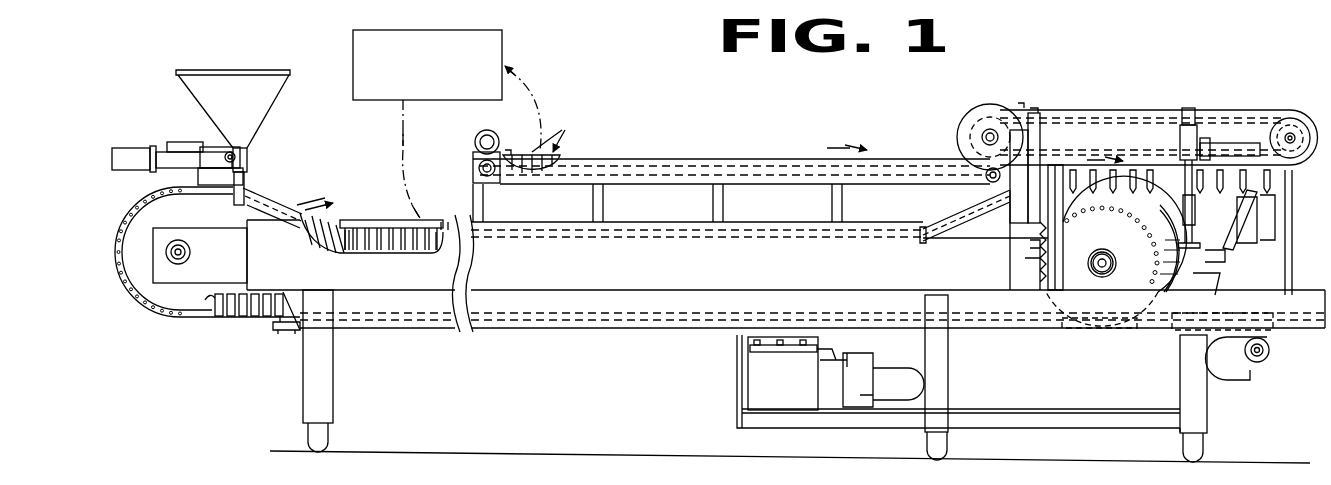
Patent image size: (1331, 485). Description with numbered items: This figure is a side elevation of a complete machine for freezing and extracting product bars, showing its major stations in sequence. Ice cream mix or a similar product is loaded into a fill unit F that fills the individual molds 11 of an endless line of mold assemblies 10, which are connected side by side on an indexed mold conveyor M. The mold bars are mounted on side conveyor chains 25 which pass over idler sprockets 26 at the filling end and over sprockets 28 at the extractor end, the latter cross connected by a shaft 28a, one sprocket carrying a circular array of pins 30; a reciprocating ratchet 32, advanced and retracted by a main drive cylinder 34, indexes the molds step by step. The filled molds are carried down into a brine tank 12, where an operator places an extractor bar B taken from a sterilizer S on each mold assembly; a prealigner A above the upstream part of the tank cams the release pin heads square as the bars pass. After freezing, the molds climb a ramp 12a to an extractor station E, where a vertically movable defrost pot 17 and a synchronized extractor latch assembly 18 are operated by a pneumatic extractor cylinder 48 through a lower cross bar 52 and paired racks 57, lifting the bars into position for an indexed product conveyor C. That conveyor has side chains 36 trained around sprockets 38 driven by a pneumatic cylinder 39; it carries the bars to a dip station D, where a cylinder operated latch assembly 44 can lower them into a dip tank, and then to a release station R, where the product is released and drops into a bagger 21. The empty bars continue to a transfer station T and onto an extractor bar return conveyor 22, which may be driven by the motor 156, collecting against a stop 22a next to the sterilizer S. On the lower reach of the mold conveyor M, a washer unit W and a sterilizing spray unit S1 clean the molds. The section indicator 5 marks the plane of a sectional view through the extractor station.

The fill unit F is at (207, 125).
The mold conveyor M is at (160, 340).
The idler sprockets 26 is at (190, 216).
The individual molds 11 is at (270, 292).
The mold assemblies 10 is at (358, 240).
The side conveyor chains 25 is at (441, 238).
The sterilizing spray unit S1 is at (295, 336).
The brine tank 12 is at (627, 268).
The ramp 12a is at (960, 216).
The sterilizer S is at (427, 65).
The extractor bar B is at (485, 139).
The extractor bar return conveyor 22 is at (602, 154).
The motor 156 is at (476, 141).
The stop 22a is at (507, 150).
The prealigner A is at (445, 216).
The extractor station E is at (1015, 103).
The side chains 36 is at (975, 114).
The transfer station T is at (950, 125).
The extractor latch assembly 18 is at (975, 150).
The pneumatic extractor cylinder 48 is at (1040, 140).
The paired racks 57 is at (1034, 92).
The section line 5 is at (1020, 175).
The defrost pot 17 is at (1018, 252).
The product conveyor C is at (1170, 105).
The release station R is at (1262, 130).
The sprockets 38 is at (1312, 158).
The cylinder operated latch assembly 44 is at (1185, 133).
The dip station D is at (1205, 100).
The pneumatic cylinder 39 is at (1170, 193).
The sprockets 28 is at (1122, 238).
The shaft 28a is at (1120, 265).
The pins 30 is at (1165, 262).
The lower cross bar 52 is at (1043, 272).
The reciprocating ratchet 32 is at (1128, 335).
The main drive cylinder 34 is at (1260, 316).
The bagger 21 is at (1282, 256).
The washer unit W is at (772, 356).